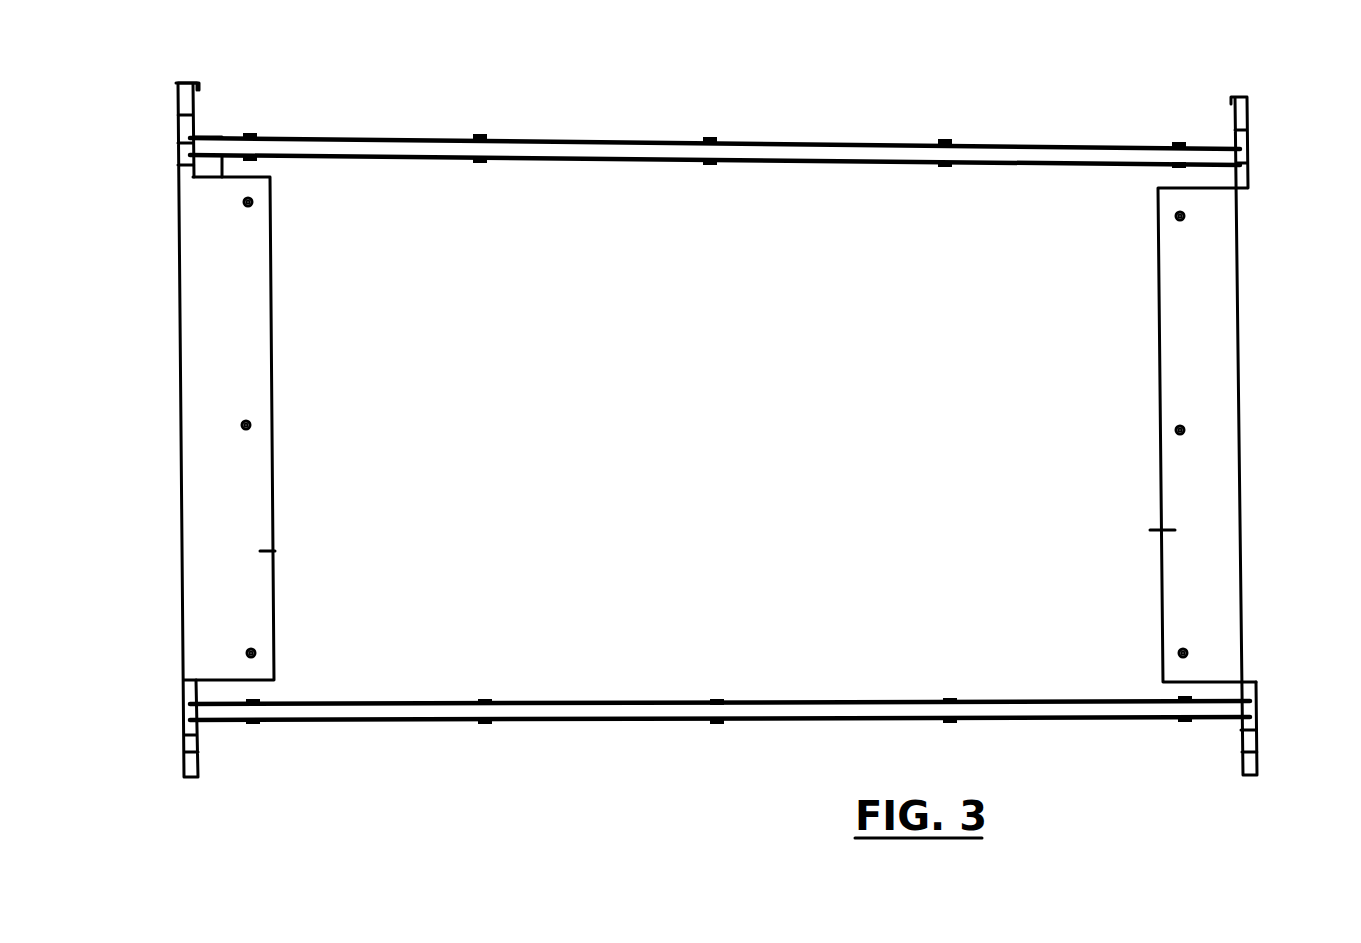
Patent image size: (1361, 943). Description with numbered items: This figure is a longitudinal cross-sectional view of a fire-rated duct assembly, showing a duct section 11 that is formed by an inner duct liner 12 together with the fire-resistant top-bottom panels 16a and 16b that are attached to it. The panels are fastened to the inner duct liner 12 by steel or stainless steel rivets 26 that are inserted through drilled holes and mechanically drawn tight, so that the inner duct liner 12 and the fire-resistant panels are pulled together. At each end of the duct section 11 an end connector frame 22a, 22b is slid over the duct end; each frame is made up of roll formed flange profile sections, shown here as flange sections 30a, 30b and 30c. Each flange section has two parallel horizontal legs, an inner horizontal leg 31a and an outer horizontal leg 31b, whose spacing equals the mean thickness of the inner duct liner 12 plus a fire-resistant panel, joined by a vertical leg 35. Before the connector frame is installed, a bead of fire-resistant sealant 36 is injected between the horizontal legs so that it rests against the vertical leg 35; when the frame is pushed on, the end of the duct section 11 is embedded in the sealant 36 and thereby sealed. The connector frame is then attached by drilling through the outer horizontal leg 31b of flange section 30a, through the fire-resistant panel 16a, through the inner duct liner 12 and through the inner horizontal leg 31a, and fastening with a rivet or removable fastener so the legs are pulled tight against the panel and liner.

The duct section 11 is at (738, 128).
The inner duct liner 12 is at (640, 160).
The fire-resistant top-bottom panel 16a is at (404, 140).
The fire-resistant top-bottom panel 16b is at (414, 718).
The end connector frame 22a is at (180, 518).
The end connector frame 22b is at (1256, 586).
The rivets 26 is at (484, 162).
The flange profile section 30a is at (268, 158).
The flange profile section 30b is at (266, 551).
The flange profile section 30c is at (270, 698).
The inner horizontal leg 31a is at (227, 178).
The outer horizontal leg 31b is at (217, 137).
The vertical leg 35 is at (178, 110).
The fire-resistant sealant 36 is at (178, 142).